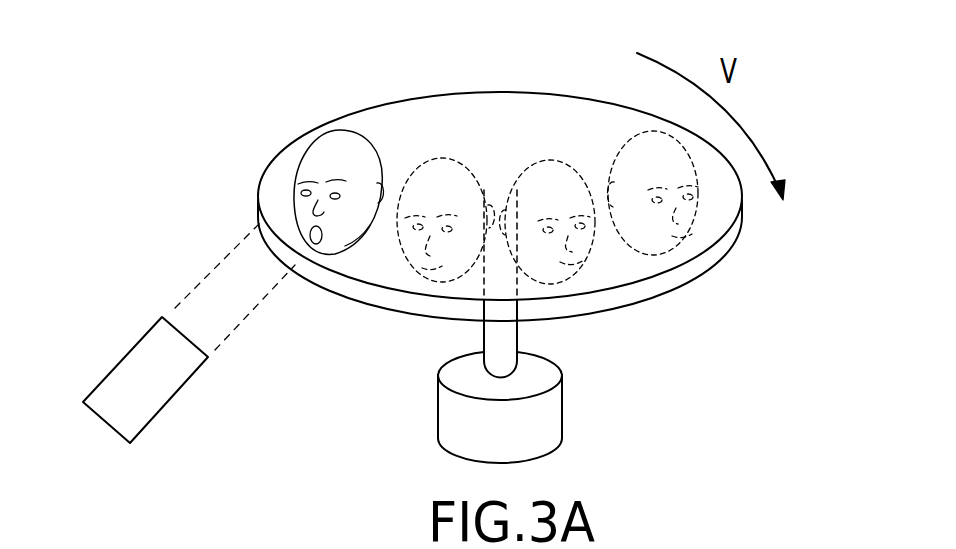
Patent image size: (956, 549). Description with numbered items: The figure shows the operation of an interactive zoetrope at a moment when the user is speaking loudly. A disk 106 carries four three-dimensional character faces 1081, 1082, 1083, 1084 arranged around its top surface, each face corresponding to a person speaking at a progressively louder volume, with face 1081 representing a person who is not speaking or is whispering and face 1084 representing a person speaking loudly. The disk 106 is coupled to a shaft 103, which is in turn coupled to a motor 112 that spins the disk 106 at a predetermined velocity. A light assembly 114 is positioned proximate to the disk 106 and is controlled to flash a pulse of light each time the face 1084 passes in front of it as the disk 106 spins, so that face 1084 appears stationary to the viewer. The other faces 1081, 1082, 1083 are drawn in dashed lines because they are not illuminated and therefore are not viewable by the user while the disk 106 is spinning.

The disk 106 is at (380, 103).
The shaft 103 is at (520, 285).
The motor 112 is at (438, 381).
The light assembly 114 is at (130, 353).
The 3D character face 1084 is at (293, 183).
The 3D character face 1083 is at (403, 242).
The 3D character face 1082 is at (578, 272).
The 3D character face 1081 is at (688, 227).